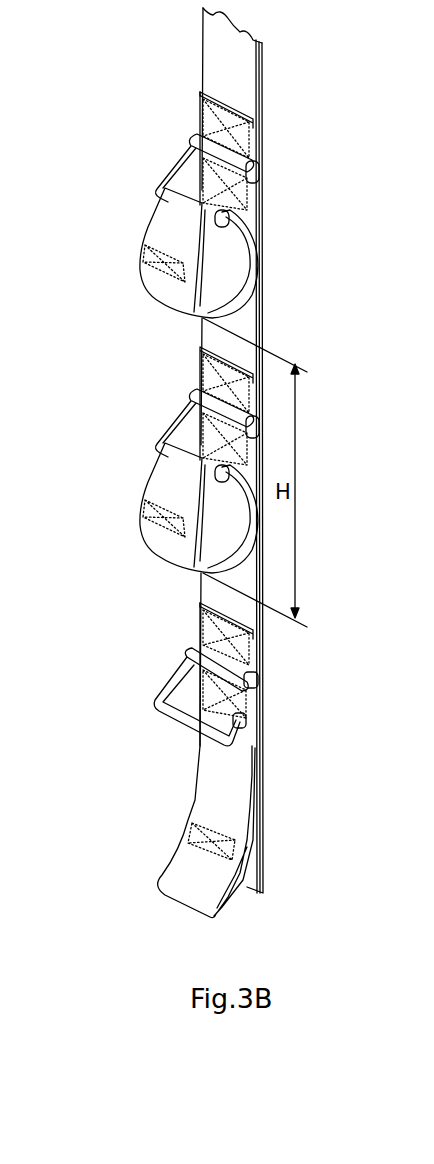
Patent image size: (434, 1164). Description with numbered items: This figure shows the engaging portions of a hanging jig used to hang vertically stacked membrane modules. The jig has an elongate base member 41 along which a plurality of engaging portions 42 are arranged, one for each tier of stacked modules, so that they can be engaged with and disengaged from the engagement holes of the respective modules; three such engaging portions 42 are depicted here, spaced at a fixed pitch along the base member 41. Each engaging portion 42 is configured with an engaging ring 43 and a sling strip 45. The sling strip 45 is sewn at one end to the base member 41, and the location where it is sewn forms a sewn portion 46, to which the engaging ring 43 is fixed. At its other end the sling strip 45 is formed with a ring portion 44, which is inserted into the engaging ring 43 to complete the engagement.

The base member 41 is at (218, 75).
The engaging portion 42 is at (78, 157).
The engaging ring 43 is at (175, 163).
The ring portion 44 is at (172, 218).
The sling strip 45 is at (160, 288).
The sewn portion 46 is at (200, 148).